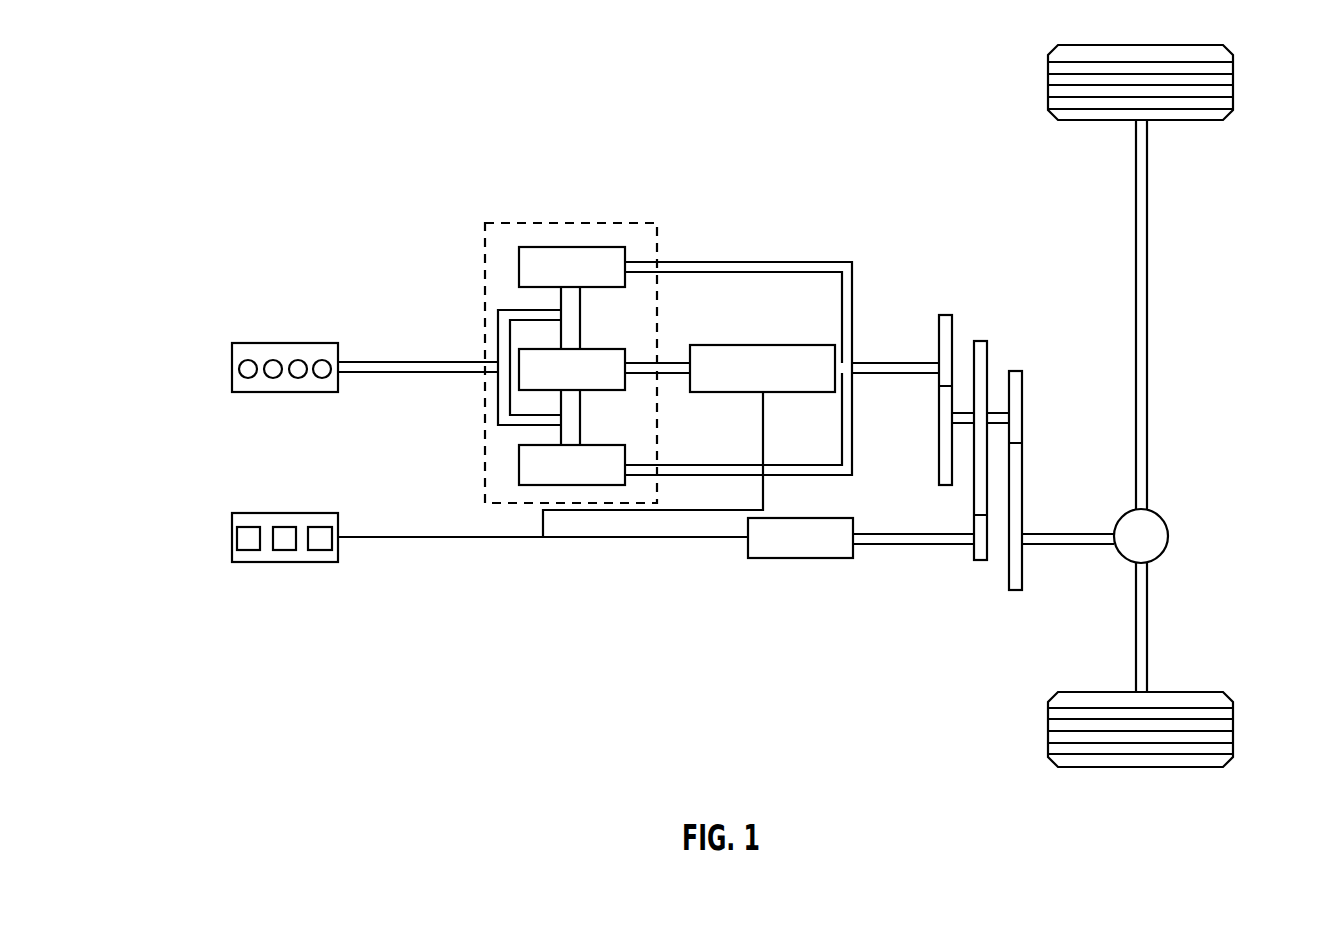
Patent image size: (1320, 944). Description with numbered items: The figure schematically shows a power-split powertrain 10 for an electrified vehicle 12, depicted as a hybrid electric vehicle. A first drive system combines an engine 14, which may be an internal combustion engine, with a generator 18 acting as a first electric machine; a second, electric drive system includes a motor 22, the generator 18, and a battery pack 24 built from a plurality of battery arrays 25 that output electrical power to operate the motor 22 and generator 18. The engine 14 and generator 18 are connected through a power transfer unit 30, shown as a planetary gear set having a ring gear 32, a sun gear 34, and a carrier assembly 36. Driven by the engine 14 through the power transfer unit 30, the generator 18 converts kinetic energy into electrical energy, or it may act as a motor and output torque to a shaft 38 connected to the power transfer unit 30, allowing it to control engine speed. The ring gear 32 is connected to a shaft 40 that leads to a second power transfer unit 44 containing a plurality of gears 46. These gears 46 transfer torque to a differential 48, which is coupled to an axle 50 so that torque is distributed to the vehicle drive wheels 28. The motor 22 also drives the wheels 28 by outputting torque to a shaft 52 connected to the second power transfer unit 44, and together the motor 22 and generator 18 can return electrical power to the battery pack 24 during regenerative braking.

The powertrain 10 is at (195, 157).
The electrified vehicle 12 is at (781, 205).
The engine 14 is at (283, 394).
The generator 18 is at (780, 345).
The motor 22 is at (800, 558).
The battery pack 24 is at (262, 542).
The battery arrays 25 is at (320, 540).
The vehicle drive wheels 28 is at (1233, 87).
The power transfer unit 30 is at (553, 222).
The ring gear 32 is at (585, 247).
The sun gear 34 is at (595, 349).
The carrier assembly 36 is at (498, 398).
The shaft 38 is at (668, 363).
The shaft 40 is at (906, 374).
The second power transfer unit 44 is at (1033, 242).
The gears 46 is at (1016, 371).
The differential 48 is at (1168, 535).
The axle 50 is at (1148, 438).
The shaft 52 is at (906, 545).